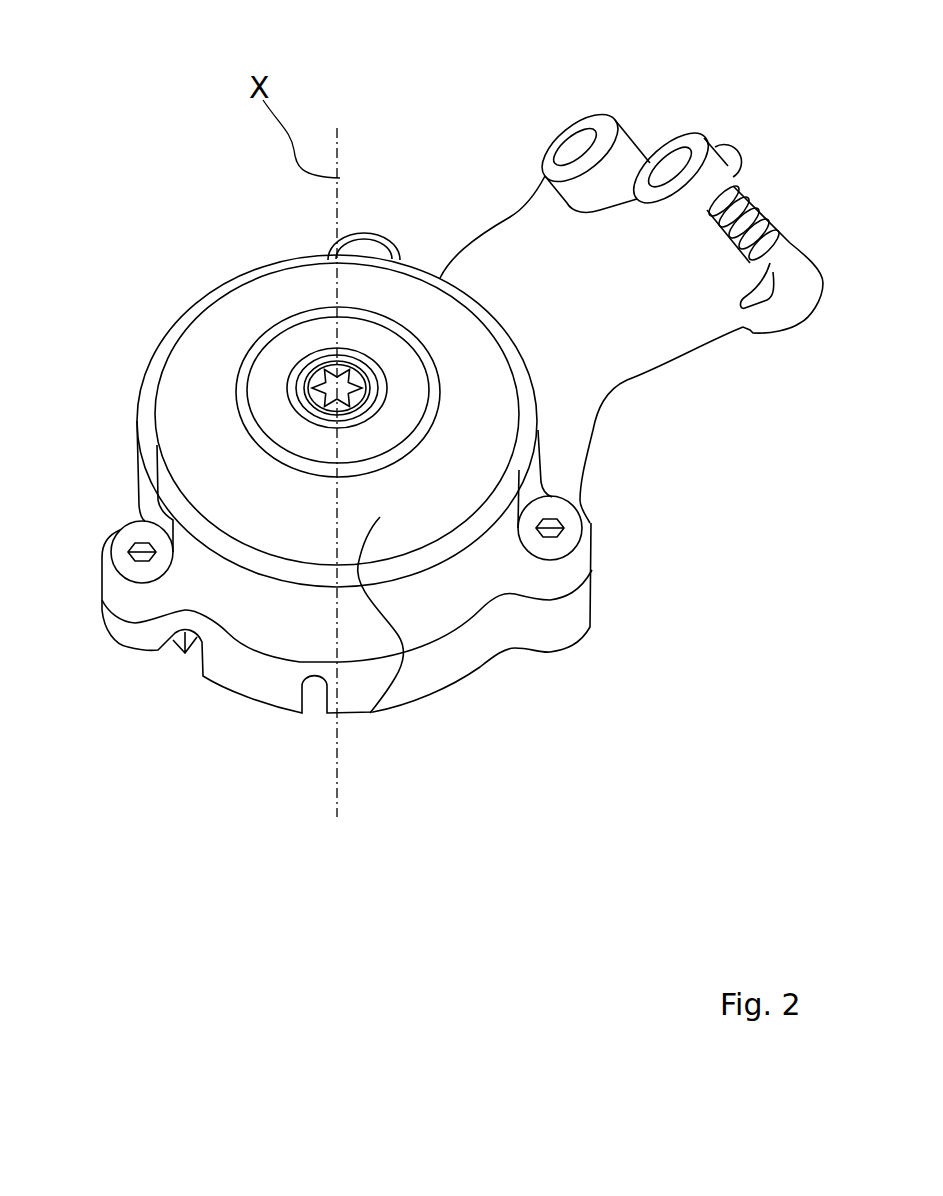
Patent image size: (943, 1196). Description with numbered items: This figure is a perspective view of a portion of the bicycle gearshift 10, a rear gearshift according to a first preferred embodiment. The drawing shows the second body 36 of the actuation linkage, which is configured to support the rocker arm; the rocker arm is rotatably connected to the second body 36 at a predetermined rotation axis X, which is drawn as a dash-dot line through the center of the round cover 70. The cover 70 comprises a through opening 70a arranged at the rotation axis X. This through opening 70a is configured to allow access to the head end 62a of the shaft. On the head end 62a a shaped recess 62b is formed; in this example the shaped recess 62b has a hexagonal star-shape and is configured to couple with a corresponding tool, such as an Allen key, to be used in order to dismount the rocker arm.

The bicycle gearshift 10 is at (136, 103).
The second body 36 is at (615, 340).
The head end 62a is at (357, 370).
The shaped recess 62b is at (333, 387).
The cover 70 is at (347, 476).
The through opening 70a is at (297, 367).